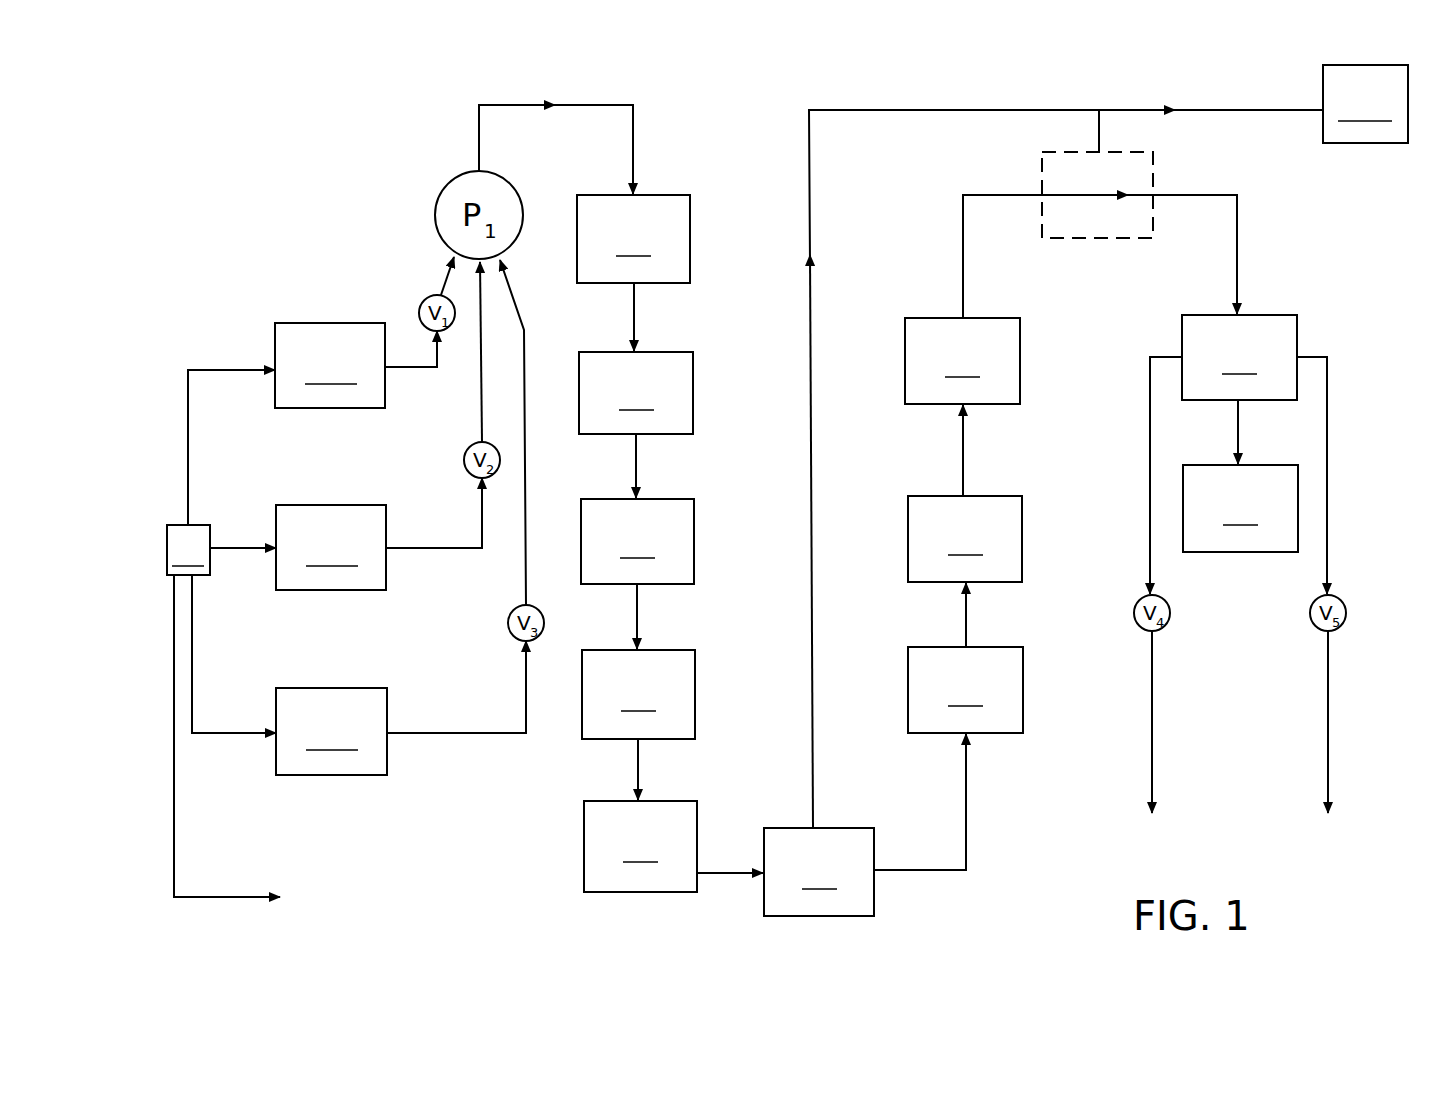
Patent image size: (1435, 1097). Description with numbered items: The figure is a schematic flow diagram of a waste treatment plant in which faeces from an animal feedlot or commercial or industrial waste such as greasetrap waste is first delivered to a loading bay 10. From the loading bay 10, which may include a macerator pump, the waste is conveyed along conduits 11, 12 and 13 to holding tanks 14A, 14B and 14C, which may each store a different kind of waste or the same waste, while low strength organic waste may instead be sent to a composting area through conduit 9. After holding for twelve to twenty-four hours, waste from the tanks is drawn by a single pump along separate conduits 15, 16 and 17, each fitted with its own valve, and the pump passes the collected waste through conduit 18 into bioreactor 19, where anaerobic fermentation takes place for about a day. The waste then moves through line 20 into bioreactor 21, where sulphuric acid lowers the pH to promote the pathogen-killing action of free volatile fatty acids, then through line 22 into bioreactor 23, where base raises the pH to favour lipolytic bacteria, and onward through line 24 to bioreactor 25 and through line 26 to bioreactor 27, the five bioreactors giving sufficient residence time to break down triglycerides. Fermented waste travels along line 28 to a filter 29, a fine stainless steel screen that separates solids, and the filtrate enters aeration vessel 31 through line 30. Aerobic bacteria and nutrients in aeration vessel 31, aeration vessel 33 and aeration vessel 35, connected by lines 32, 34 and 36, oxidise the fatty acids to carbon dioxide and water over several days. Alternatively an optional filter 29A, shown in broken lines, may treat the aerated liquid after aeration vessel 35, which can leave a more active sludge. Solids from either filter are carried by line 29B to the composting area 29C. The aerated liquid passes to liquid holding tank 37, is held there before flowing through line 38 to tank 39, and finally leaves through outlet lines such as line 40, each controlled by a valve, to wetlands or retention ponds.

The conduit 9 is at (174, 852).
The loading bay 10 is at (188, 550).
The conduit 11 is at (188, 437).
The conduit 12 is at (233, 546).
The conduit 13 is at (192, 665).
The holding tank 14A is at (331, 731).
The holding tank 14B is at (331, 547).
The holding tank 14C is at (330, 365).
The conduit 15 is at (443, 280).
The conduit 16 is at (481, 395).
The conduit 17 is at (526, 455).
The conduit 18 is at (513, 105).
The bioreactor 19 is at (633, 239).
The line 20 is at (640, 327).
The bioreactor 21 is at (636, 393).
The line 22 is at (640, 478).
The bioreactor 23 is at (637, 541).
The line 24 is at (640, 620).
The bioreactor 25 is at (638, 694).
The line 26 is at (640, 765).
The bioreactor 27 is at (640, 846).
The line 28 is at (717, 872).
The filter 29 is at (819, 872).
The filter 29A is at (1155, 182).
The line 29B is at (907, 110).
The composting area 29C is at (1365, 104).
The line 30 is at (967, 815).
The aeration vessel 31 is at (965, 690).
The line 32 is at (967, 623).
The aeration vessel 33 is at (965, 539).
The line 34 is at (965, 462).
The aeration vessel 35 is at (962, 361).
The line 36 is at (1083, 193).
The liquid holding tank 37 is at (1239, 357).
The line 38 is at (1243, 437).
The tank 39 is at (1240, 508).
The line 40 is at (1150, 528).